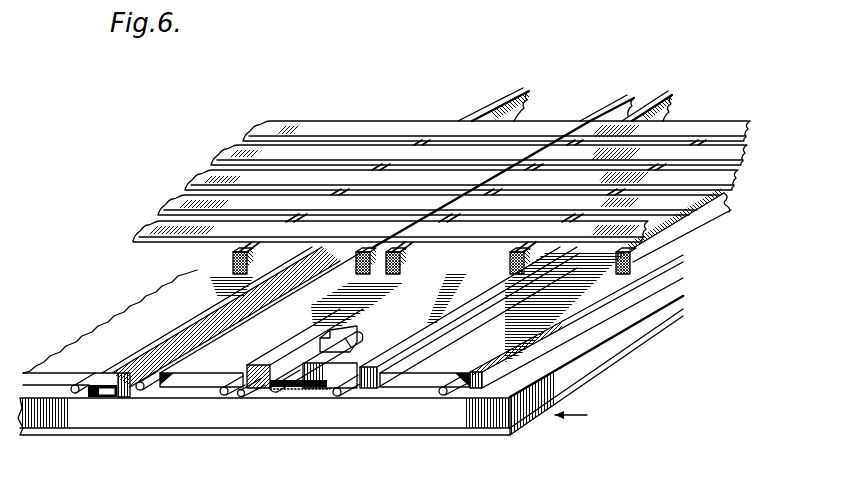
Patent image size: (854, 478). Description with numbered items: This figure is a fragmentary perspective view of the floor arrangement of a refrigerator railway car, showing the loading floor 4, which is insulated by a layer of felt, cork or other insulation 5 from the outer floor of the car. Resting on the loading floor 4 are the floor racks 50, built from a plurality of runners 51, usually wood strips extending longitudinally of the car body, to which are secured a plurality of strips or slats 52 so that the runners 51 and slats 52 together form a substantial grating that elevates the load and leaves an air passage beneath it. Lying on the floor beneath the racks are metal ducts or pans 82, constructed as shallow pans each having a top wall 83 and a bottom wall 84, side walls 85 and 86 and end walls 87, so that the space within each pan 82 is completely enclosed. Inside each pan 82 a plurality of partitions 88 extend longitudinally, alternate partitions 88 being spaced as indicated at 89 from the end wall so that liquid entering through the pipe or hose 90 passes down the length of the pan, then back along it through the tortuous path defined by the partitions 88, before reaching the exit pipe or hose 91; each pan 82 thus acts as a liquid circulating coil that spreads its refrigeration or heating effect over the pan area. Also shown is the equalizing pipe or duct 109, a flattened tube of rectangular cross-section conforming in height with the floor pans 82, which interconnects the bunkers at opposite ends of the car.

The loading floor 4 is at (577, 410).
The insulation 5 is at (573, 376).
The floor racks 50 is at (537, 128).
The runners 51 is at (232, 262).
The strips or slats 52 is at (386, 127).
The metal ducts or pans 82 is at (228, 366).
The top wall 83 is at (346, 373).
The bottom wall 84 is at (296, 389).
The side wall 85 is at (371, 389).
The side wall 86 is at (256, 398).
The end walls 87 is at (411, 383).
The partitions 88 is at (347, 368).
The spacing 89 is at (300, 372).
The pipe or hose 90 is at (146, 391).
The pipe or hose 91 is at (80, 396).
The equalizing pipe or duct 109 is at (210, 318).